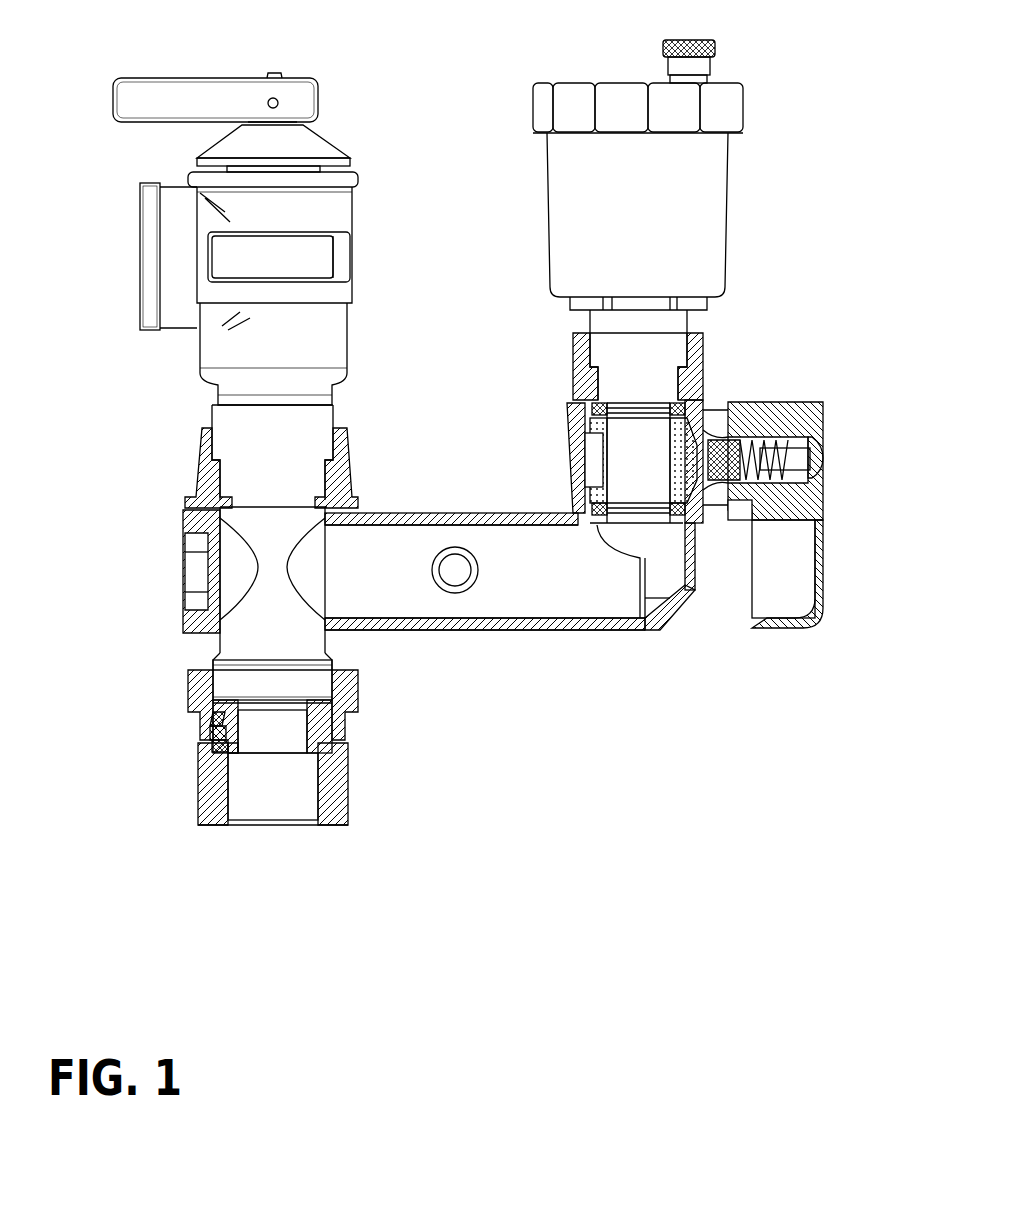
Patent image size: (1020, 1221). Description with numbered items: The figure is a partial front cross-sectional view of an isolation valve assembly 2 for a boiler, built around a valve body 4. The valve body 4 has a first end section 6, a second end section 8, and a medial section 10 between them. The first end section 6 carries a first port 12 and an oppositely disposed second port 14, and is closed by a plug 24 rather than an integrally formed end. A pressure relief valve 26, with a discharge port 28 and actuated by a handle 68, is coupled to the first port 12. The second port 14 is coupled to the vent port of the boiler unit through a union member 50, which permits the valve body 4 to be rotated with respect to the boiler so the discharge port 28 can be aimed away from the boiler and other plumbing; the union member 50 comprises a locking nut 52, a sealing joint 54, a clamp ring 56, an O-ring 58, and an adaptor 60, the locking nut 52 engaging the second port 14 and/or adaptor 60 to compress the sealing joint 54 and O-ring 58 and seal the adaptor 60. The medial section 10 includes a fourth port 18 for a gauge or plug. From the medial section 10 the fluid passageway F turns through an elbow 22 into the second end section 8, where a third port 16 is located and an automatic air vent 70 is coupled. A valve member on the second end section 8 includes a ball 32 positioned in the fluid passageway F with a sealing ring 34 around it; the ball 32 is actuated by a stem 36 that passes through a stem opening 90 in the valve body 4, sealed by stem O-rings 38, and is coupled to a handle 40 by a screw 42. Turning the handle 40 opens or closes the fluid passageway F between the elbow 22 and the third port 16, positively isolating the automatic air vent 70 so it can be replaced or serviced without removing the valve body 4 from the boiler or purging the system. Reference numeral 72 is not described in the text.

The isolation valve assembly 2 is at (592, 636).
The valve body 4 is at (377, 633).
The first end section 6 is at (267, 563).
The second end section 8 is at (693, 500).
The medial section 10 is at (515, 545).
The first port 12 is at (200, 448).
The second port 14 is at (193, 662).
The third port 16 is at (712, 425).
The fourth port 18 is at (462, 587).
The elbow 22 is at (660, 545).
The plug 24 is at (190, 631).
The pressure relief valve 26 is at (333, 215).
The discharge port 28 is at (140, 262).
The ball 32 is at (703, 500).
The sealing ring 34 is at (578, 408).
The stem 36 is at (757, 437).
The stem O-rings 38 is at (735, 500).
The handle 40 is at (795, 425).
The screw 42 is at (813, 462).
The union member 50 is at (352, 705).
The locking nut 52 is at (195, 728).
The sealing joint 54 is at (200, 710).
The clamp ring 56 is at (193, 737).
The O-ring 58 is at (217, 763).
The adaptor 60 is at (207, 820).
The handle 68 is at (130, 77).
The automatic air vent 70 is at (700, 193).
The vent nut 72 is at (700, 337).
The stem opening 90 is at (723, 430).
The fluid passageway F is at (538, 635).